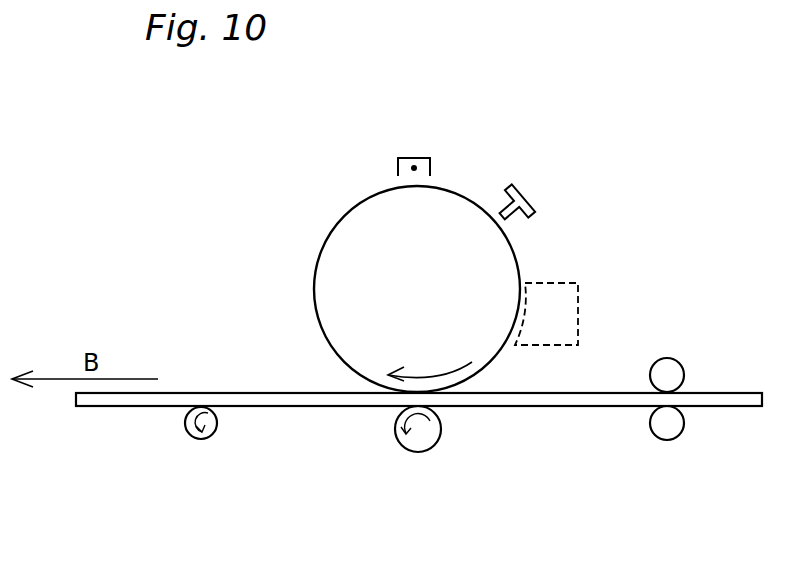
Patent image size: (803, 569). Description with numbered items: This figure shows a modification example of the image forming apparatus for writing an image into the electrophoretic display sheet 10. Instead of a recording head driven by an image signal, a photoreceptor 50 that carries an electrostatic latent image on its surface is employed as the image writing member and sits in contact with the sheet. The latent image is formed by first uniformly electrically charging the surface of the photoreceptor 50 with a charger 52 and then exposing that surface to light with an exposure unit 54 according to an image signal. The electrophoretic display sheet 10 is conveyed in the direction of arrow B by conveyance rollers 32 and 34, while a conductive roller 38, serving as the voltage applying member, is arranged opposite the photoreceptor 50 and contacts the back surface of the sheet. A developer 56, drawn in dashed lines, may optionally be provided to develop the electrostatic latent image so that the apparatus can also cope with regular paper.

The electrophoretic display sheet 10 is at (258, 393).
The photoreceptor 50 is at (330, 243).
The charger 52 is at (413, 157).
The exposure unit 54 is at (522, 188).
The developer 56 is at (578, 305).
The conveyance roller 32 is at (203, 440).
The conductive roller 38 is at (417, 452).
The conveyance roller 34 is at (667, 441).